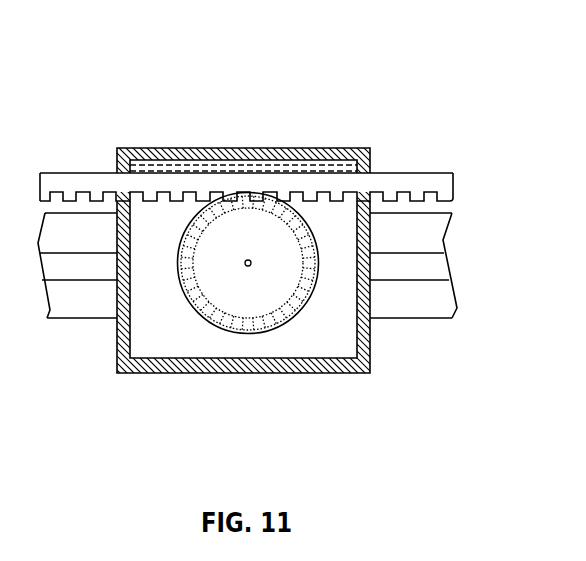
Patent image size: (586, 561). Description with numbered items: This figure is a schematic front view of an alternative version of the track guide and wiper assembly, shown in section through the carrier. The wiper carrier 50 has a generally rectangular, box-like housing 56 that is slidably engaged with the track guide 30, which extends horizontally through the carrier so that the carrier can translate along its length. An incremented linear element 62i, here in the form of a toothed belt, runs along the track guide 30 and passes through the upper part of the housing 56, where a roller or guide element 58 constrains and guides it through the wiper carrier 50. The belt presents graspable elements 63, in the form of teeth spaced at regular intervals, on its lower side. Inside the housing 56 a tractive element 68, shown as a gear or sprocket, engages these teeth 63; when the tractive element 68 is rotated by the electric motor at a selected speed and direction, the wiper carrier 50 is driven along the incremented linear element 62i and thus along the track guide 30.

The wiper carrier 50 is at (293, 236).
The housing 56 is at (237, 148).
The guide element 58 is at (271, 168).
The incremented linear element 62i is at (246, 183).
The graspable elements 63 is at (148, 203).
The tractive element 68 is at (215, 322).
The track guide 30 is at (402, 308).